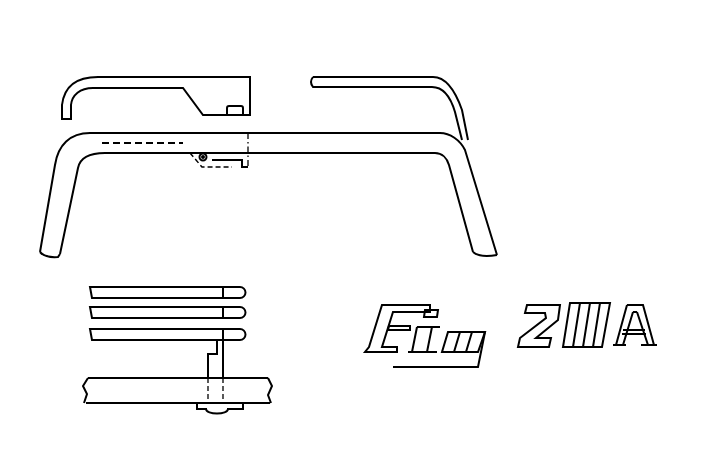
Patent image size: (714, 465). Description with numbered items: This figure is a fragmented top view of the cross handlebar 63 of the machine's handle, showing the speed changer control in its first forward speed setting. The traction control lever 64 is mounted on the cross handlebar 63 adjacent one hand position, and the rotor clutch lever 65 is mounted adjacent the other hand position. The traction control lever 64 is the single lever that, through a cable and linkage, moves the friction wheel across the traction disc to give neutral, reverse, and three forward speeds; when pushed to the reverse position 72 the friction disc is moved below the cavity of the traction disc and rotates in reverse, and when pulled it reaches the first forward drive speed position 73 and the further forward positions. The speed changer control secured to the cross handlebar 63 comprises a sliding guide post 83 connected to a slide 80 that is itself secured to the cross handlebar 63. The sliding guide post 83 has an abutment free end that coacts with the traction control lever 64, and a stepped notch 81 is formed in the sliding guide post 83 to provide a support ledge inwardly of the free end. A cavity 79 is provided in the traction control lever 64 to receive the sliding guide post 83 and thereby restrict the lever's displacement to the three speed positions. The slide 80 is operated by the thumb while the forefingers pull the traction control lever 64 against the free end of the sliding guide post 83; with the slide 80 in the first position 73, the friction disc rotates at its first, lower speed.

The cross handlebar 63 is at (127, 155).
The traction control lever 64 is at (183, 80).
The rotor clutch lever 65 is at (378, 73).
The reverse position 72 is at (245, 292).
The first forward drive speed position 73 is at (246, 334).
The cavity 79 is at (232, 105).
The slide 80 is at (232, 160).
The stepped notch 81 is at (217, 341).
The sliding guide post 83 is at (202, 162).